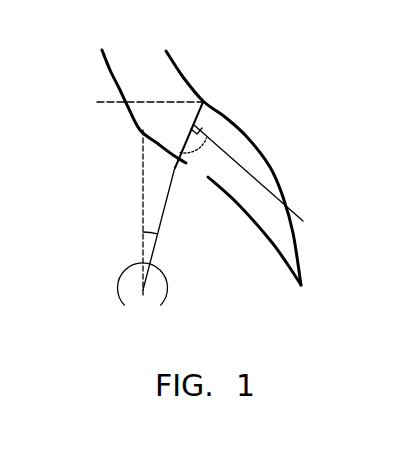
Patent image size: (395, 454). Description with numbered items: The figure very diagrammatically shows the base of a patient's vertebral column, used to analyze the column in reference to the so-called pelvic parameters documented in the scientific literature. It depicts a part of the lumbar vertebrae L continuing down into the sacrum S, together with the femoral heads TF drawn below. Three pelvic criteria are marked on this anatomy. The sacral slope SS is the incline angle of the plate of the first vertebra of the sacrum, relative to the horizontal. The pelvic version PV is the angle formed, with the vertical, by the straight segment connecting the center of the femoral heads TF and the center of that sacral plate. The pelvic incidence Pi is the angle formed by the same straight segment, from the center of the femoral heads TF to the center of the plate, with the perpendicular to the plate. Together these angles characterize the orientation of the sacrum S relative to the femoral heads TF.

The lumbar vertebrae L is at (178, 64).
The sacrum S is at (246, 127).
The sacral slope SS is at (193, 116).
The pelvic incidence Pi is at (241, 173).
The pelvic version PV is at (159, 228).
The femoral heads TF is at (119, 276).